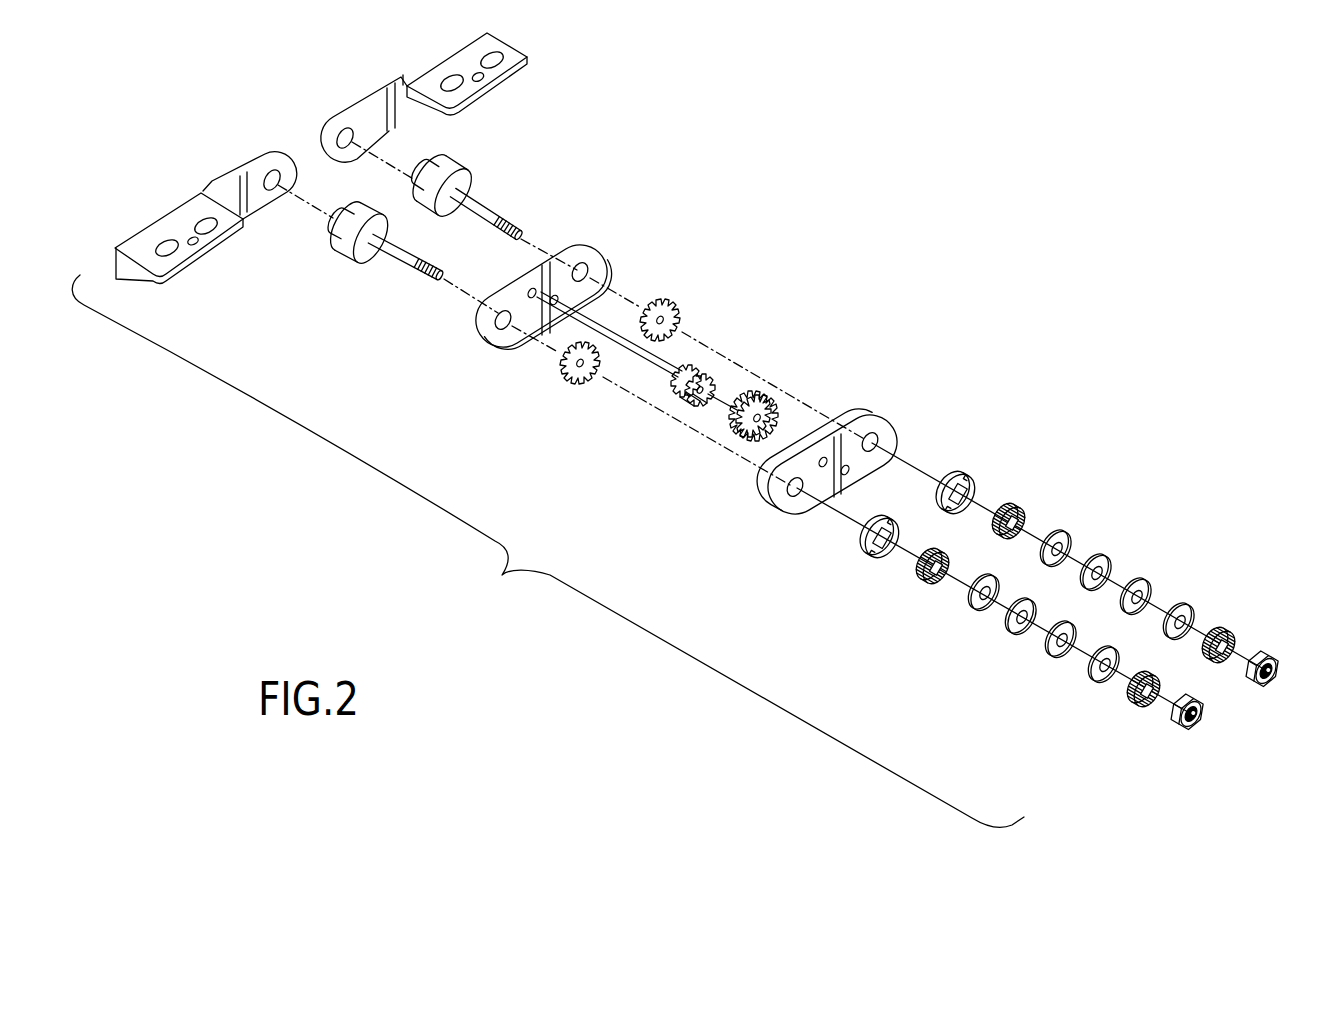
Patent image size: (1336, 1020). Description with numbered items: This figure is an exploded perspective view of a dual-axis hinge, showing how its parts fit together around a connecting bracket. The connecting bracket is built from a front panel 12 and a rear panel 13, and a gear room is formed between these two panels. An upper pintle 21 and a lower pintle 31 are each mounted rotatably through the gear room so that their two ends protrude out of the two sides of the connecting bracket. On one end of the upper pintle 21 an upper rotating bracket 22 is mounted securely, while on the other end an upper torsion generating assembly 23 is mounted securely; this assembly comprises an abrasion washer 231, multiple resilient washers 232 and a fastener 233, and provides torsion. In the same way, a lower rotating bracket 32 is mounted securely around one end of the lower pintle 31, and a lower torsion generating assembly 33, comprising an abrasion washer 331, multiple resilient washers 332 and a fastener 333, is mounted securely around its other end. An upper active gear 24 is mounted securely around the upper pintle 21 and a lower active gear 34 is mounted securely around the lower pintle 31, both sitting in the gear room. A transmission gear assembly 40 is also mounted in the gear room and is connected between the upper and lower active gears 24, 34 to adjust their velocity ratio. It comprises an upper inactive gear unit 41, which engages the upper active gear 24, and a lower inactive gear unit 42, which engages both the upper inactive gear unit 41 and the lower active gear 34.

The front panel 12 is at (873, 420).
The rear panel 13 is at (577, 243).
The upper pintle 21 is at (483, 210).
The upper rotating bracket 22 is at (387, 102).
The upper torsion generating assembly 23 is at (1128, 577).
The abrasion washer 231 is at (1023, 510).
The resilient washers 232 is at (1147, 587).
The fastener 233 is at (1263, 657).
The upper active gear 24 is at (678, 310).
The lower pintle 31 is at (397, 263).
The lower rotating bracket 32 is at (231, 180).
The lower torsion generating assembly 33 is at (1030, 641).
The abrasion washer 331 is at (923, 583).
The resilient washers 332 is at (1093, 677).
The fastener 333 is at (1187, 730).
The lower active gear 34 is at (572, 378).
The transmission gear assembly 40 is at (684, 405).
The upper inactive gear unit 41 is at (773, 390).
The lower inactive gear unit 42 is at (690, 413).